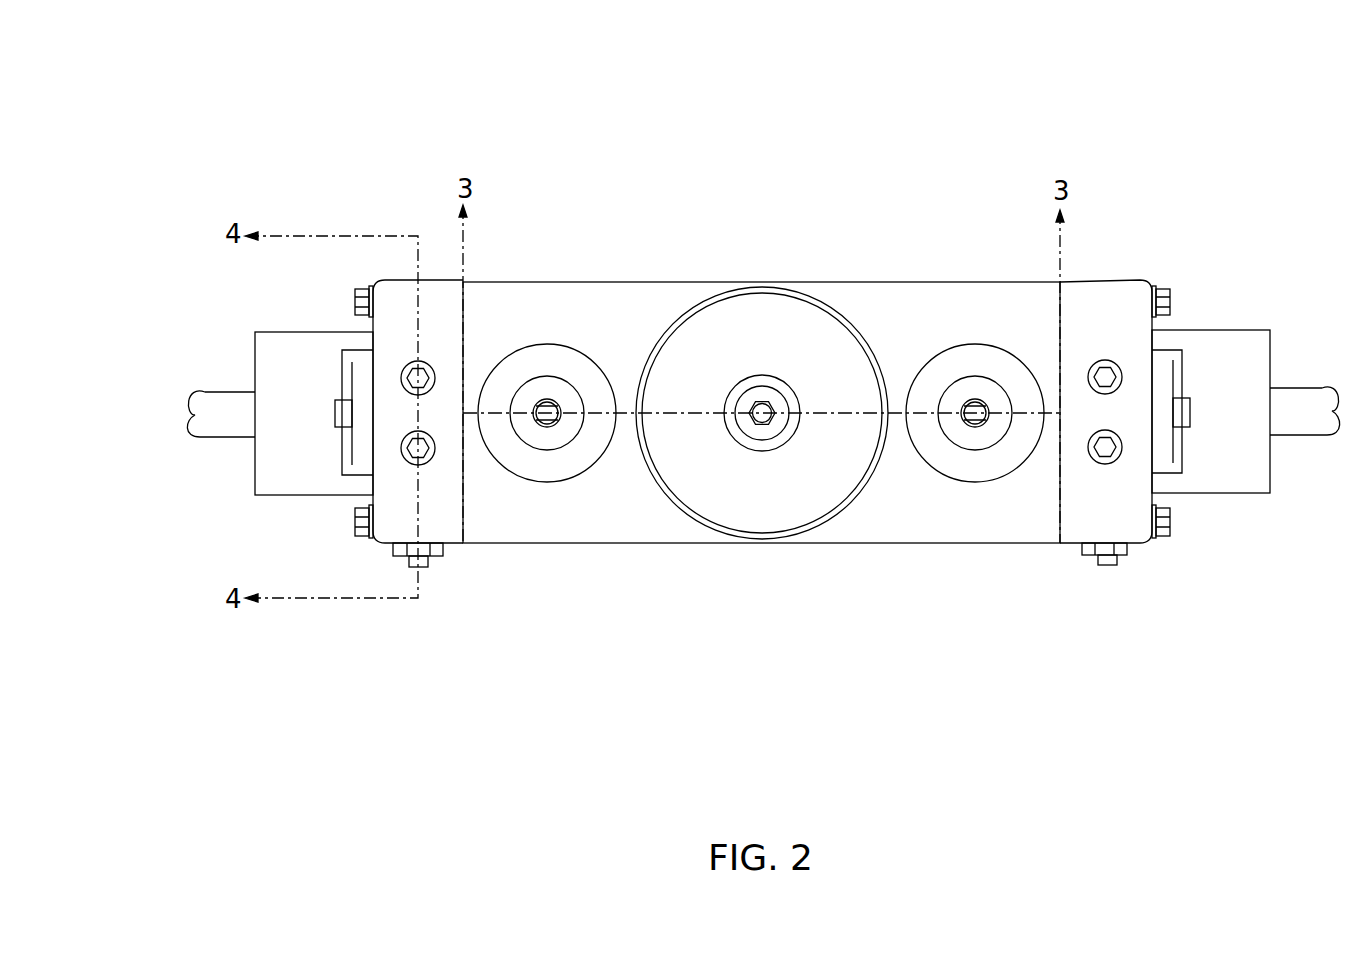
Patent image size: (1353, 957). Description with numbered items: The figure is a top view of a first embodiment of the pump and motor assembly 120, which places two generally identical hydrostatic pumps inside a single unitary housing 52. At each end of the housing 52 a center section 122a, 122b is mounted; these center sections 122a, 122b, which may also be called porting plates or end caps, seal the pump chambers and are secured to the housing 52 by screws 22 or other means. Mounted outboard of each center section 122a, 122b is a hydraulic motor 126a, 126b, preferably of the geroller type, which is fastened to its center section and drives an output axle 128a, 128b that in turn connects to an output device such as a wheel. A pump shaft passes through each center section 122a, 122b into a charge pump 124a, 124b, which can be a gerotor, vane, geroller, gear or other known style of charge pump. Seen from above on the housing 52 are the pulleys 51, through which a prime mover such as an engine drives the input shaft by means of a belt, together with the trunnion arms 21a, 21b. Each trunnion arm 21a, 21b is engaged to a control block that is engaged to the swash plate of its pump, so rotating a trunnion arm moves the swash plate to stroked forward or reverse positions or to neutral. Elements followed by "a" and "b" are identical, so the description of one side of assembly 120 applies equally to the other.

The pump and motor assembly 120 is at (326, 106).
The screws 22 is at (355, 300).
The housing 52 is at (618, 282).
The pulleys 51 is at (734, 355).
The trunnion arm 21a is at (550, 398).
The trunnion arm 21b is at (971, 398).
The center section 122a is at (442, 510).
The center section 122b is at (1134, 503).
The charge pump 124a is at (342, 450).
The charge pump 124b is at (1182, 450).
The hydraulic motor 126a is at (324, 384).
The hydraulic motor 126b is at (1260, 383).
The output axle 128a is at (224, 437).
The output axle 128b is at (1300, 437).